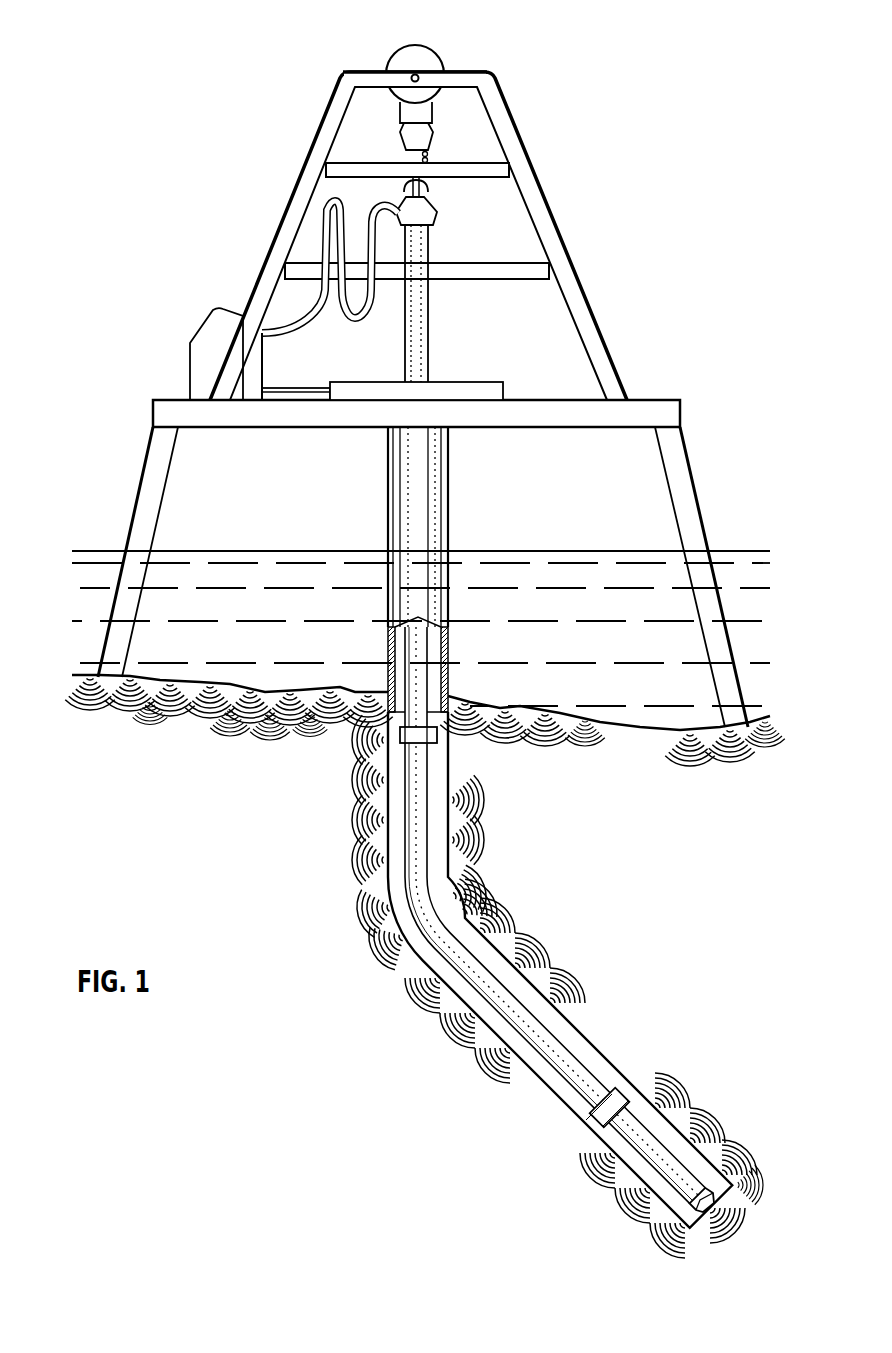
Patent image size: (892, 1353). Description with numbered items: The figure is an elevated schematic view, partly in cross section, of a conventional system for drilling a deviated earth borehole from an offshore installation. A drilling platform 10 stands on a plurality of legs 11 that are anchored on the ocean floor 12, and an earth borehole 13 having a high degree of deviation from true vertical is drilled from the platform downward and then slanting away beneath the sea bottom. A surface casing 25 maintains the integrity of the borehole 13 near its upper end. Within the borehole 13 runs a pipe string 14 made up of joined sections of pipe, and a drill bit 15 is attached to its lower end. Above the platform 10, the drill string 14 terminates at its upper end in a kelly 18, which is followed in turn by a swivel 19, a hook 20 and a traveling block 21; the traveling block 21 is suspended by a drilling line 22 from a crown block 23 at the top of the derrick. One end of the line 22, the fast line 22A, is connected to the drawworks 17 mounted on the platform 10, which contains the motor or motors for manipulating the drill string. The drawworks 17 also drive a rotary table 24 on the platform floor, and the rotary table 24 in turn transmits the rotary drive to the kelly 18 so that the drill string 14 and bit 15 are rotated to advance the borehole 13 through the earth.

The drilling platform 10 is at (652, 385).
The legs 11 is at (142, 478).
The ocean floor 12 is at (762, 720).
The earth borehole 13 is at (586, 1075).
The pipe string 14 is at (622, 1098).
The drill bit 15 is at (732, 1196).
The drawworks 17 is at (214, 311).
The kelly 18 is at (430, 356).
The swivel 19 is at (436, 222).
The hook 20 is at (434, 190).
The traveling block 21 is at (430, 146).
The drilling line 22 is at (400, 117).
The fast line 22A is at (345, 148).
The crown block 23 is at (430, 48).
The rotary table 24 is at (500, 382).
The surface casing 25 is at (453, 520).